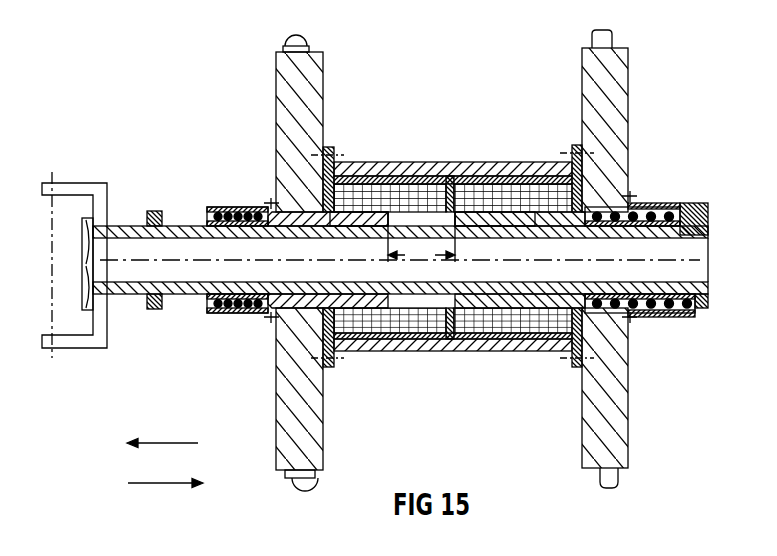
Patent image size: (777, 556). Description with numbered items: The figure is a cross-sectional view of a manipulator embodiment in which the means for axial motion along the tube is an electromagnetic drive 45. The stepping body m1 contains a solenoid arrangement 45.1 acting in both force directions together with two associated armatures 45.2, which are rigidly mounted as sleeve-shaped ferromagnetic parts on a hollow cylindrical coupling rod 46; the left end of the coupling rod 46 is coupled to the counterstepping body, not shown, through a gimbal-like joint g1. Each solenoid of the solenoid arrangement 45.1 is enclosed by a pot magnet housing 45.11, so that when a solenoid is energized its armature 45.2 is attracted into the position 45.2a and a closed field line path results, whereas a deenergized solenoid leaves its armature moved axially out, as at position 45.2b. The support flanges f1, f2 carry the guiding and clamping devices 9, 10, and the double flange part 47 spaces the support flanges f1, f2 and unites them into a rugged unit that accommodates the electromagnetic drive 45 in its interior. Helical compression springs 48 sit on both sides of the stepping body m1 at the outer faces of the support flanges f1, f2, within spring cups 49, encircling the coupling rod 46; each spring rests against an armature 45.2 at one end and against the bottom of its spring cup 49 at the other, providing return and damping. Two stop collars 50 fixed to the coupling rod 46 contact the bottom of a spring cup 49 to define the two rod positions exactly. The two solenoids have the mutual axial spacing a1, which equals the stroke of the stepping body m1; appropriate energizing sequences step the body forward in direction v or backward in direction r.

The guiding and clamping device 9 is at (305, 38).
The guiding and clamping device 10 is at (610, 30).
The stepping body m1 is at (452, 86).
The support flange f1 is at (274, 84).
The support flange f2 is at (629, 90).
The electromagnetic drive 45 is at (455, 378).
The solenoid arrangement 45.1 is at (483, 193).
The pot magnet housing 45.11 is at (362, 181).
The armature 45.2 is at (515, 218).
The armature position 45.2a is at (497, 336).
The armature position 45.2b is at (372, 351).
The coupling rod 46 is at (687, 203).
The double flange part 47 is at (532, 162).
The helical compression spring 48 is at (658, 313).
The spring cup 49 is at (658, 205).
The stop collar 50 is at (704, 308).
The gimbal-like joint g1 is at (57, 348).
The mutual axial spacing a1 is at (421, 241).
The forward direction arrow v is at (162, 453).
The backward direction arrow r is at (165, 493).